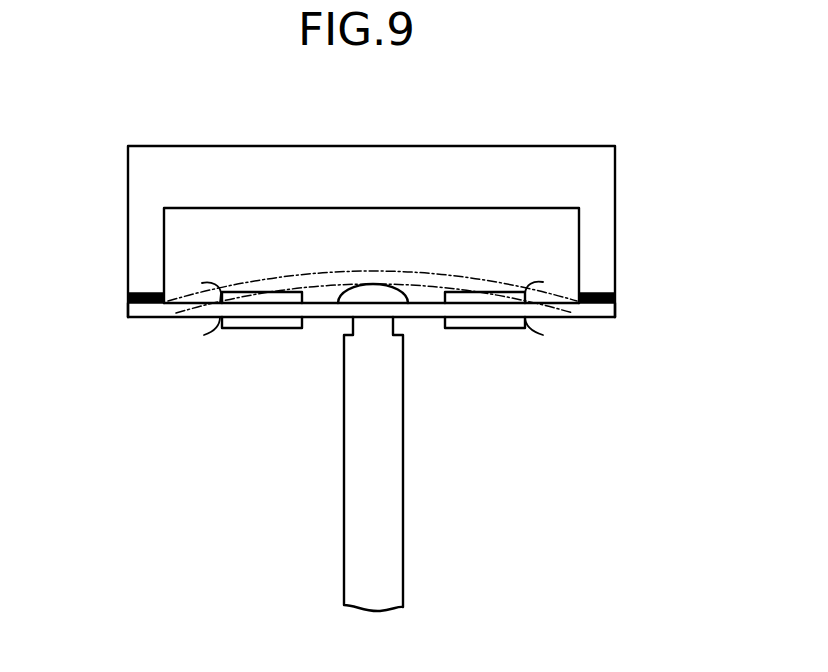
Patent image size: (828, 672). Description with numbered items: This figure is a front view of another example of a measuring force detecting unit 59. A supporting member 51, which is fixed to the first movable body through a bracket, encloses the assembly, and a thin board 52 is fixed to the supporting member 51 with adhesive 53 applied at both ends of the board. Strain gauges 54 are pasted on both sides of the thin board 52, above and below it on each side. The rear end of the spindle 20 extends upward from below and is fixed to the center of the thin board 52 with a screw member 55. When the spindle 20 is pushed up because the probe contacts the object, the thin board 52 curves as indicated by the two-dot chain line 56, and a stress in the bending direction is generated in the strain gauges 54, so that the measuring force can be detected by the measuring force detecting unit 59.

The measuring force detecting unit 59 is at (447, 142).
The supporting member 51 is at (140, 175).
The thin board 52 is at (607, 309).
The adhesive 53 is at (148, 293).
The strain gauges 54 is at (220, 293).
The screw member 55 is at (373, 284).
The two-dot chain line 56 is at (325, 288).
The spindle 20 is at (392, 512).